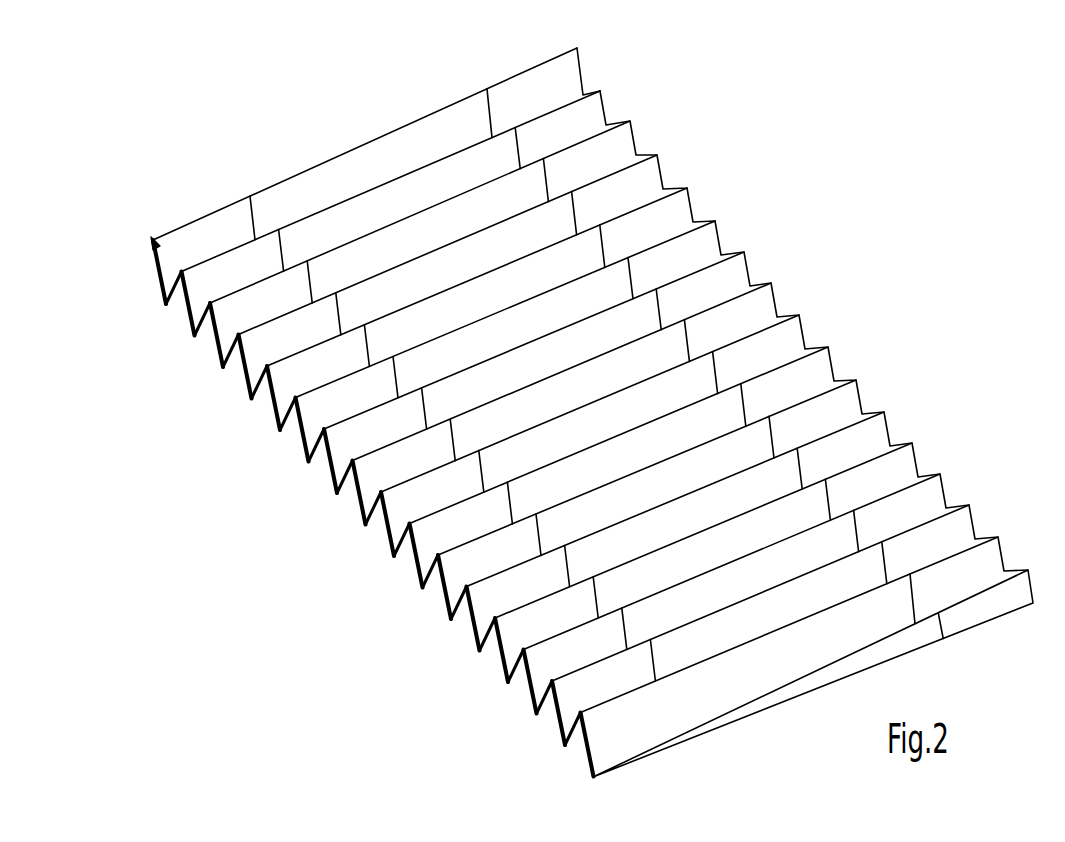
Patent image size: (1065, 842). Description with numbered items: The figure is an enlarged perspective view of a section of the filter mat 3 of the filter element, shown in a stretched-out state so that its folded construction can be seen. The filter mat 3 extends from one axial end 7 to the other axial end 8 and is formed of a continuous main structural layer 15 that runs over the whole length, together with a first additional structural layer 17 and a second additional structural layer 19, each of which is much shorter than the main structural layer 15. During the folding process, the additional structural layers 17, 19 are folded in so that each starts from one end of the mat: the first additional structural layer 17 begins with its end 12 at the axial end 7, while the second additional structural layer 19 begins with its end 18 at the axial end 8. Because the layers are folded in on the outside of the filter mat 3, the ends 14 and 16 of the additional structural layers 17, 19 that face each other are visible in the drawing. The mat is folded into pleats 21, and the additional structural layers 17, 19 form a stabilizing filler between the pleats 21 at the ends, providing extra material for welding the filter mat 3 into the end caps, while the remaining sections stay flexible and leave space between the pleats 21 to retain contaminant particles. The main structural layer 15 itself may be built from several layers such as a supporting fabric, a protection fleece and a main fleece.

The filter mat 3 is at (889, 278).
The axial end 7 is at (365, 520).
The axial end 8 is at (752, 262).
The end of additional structural layer 12 is at (153, 238).
The end of additional structural layer 14 is at (247, 193).
The main structural layer 15 is at (385, 160).
The end of additional structural layer 16 is at (485, 92).
The first additional structural layer 17 is at (217, 230).
The end of additional structural layer 18 is at (580, 47).
The second additional structural layer 19 is at (557, 88).
The pleats 21 is at (690, 188).